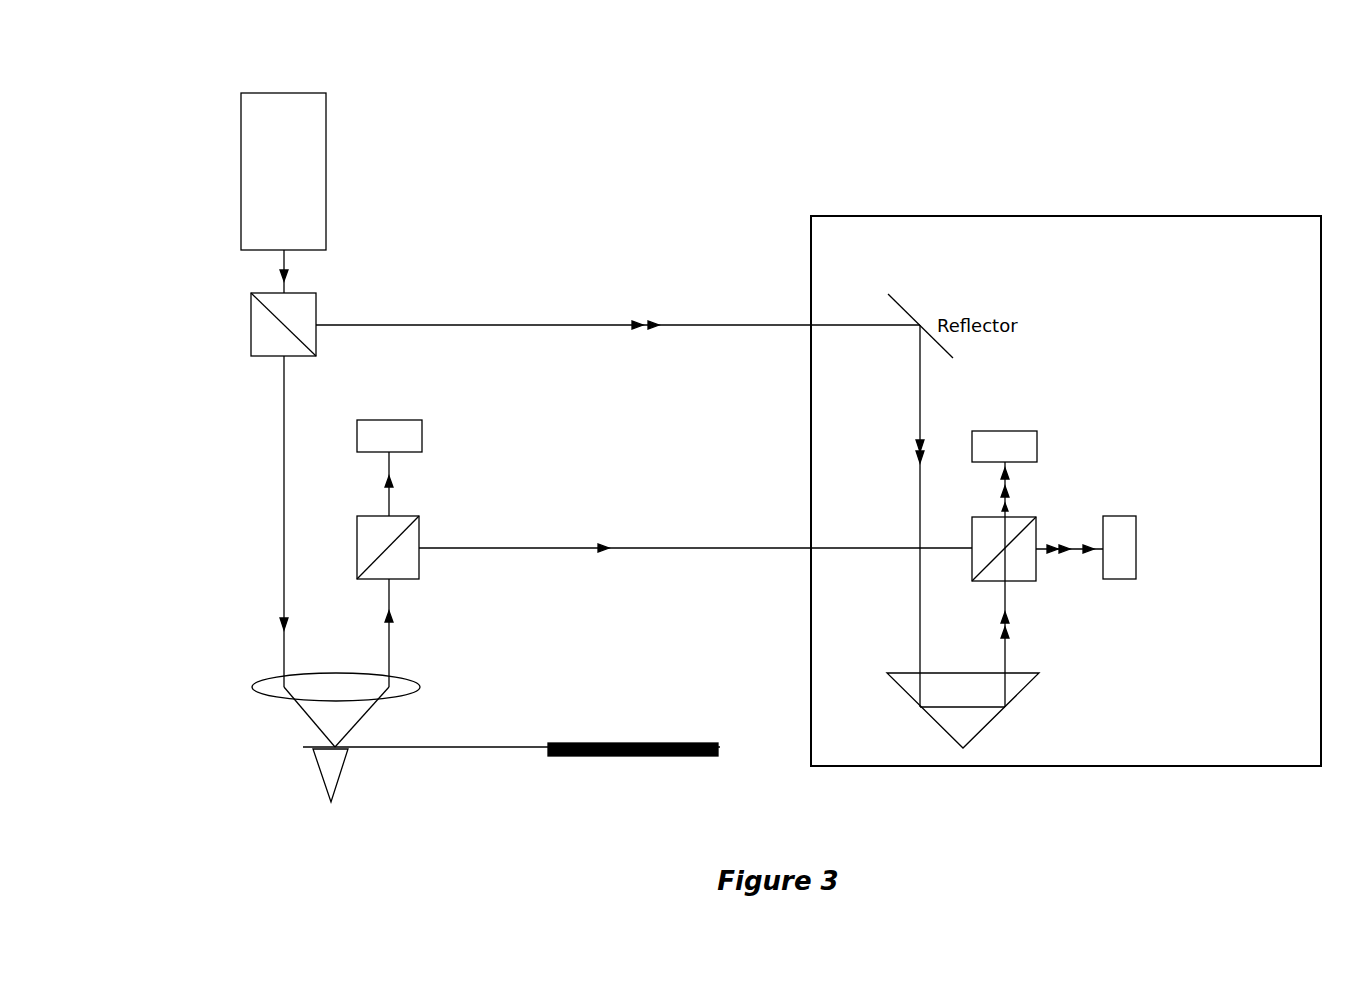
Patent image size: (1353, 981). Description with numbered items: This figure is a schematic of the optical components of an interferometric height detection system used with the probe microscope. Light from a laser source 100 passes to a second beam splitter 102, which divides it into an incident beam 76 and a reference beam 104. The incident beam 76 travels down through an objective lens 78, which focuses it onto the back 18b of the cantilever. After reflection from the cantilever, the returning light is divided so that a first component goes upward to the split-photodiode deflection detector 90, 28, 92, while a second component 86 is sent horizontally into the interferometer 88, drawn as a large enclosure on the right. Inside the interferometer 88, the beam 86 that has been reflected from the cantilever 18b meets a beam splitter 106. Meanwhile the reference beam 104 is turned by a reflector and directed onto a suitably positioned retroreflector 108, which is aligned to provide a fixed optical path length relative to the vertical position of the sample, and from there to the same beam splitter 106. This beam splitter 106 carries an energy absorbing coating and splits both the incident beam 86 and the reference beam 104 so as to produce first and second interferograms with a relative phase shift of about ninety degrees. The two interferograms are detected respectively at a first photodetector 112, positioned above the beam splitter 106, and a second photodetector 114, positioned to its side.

The laser source 100 is at (241, 178).
The second beam splitter 102 is at (251, 331).
The incident beam 76 is at (283, 452).
The objective lens 78 is at (251, 688).
The back of the cantilever 18b is at (325, 745).
The deflection detector 90 is at (451, 435).
The deflection detector 28 is at (451, 435).
The deflection detector 92 is at (422, 436).
The second component 86 is at (625, 550).
The reference beam 104 is at (713, 325).
The interferometer 88 is at (1098, 216).
The beam splitter 106 is at (1040, 571).
The retroreflector 108 is at (997, 716).
The first photodetector 112 is at (1040, 446).
The second photodetector 114 is at (1118, 516).